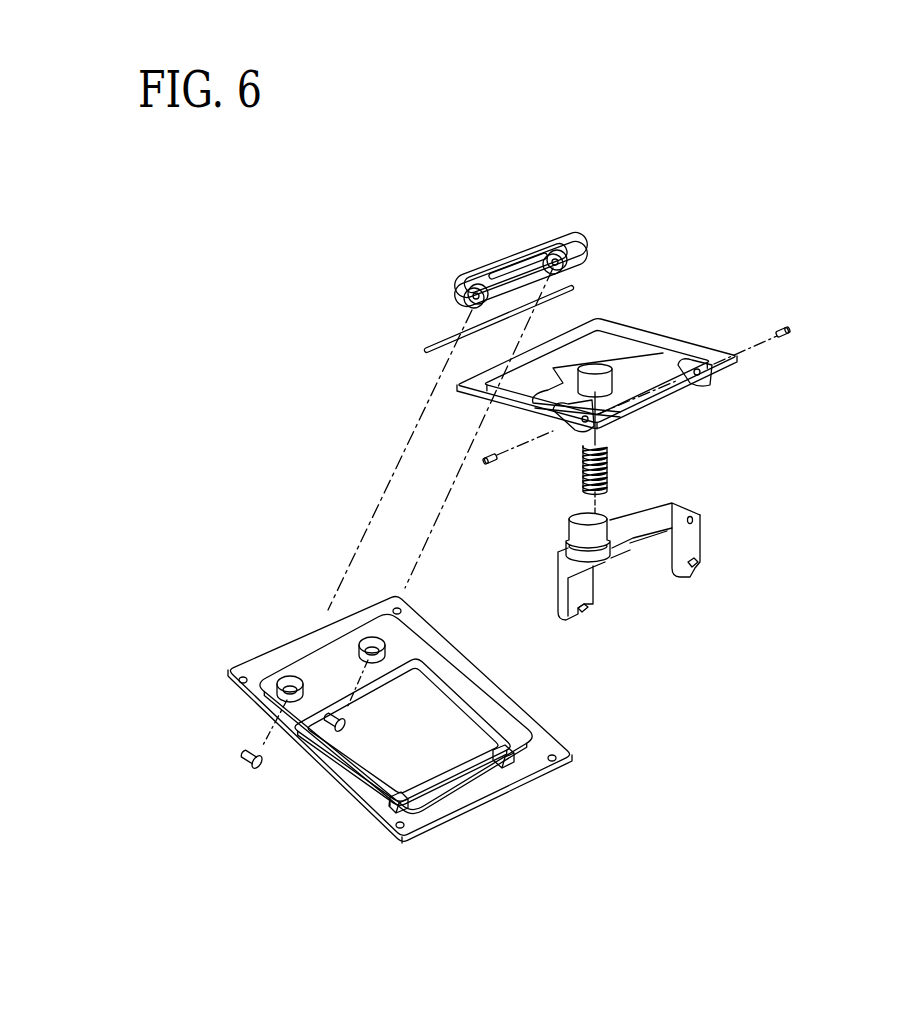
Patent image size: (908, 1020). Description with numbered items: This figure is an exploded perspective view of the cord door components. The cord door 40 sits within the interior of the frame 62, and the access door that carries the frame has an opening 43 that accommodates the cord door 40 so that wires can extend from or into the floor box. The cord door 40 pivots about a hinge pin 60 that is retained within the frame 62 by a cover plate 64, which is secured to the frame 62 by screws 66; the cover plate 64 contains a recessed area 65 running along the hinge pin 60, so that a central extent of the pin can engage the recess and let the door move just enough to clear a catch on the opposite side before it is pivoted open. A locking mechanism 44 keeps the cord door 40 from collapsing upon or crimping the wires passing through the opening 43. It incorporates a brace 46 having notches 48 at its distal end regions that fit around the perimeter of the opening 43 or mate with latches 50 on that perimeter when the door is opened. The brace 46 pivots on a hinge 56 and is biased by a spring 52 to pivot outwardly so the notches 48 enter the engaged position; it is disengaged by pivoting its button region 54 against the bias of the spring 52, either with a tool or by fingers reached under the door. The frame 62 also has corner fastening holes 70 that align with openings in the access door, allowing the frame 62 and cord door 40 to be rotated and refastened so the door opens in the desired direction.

The cord door 40 is at (677, 338).
The opening 43 is at (377, 752).
The locking mechanism 44 is at (337, 420).
The brace 46 is at (705, 540).
The notches 48 is at (583, 611).
The latches 50 is at (400, 810).
The spring 52 is at (603, 473).
The button region 54 is at (568, 532).
The hinge 56 is at (697, 383).
The hinge pin 60 is at (440, 345).
The frame 62 is at (283, 637).
The cover plate 64 is at (480, 273).
The recessed area 65 is at (567, 267).
The screws 66 is at (248, 770).
The corner fastening holes 70 is at (240, 687).